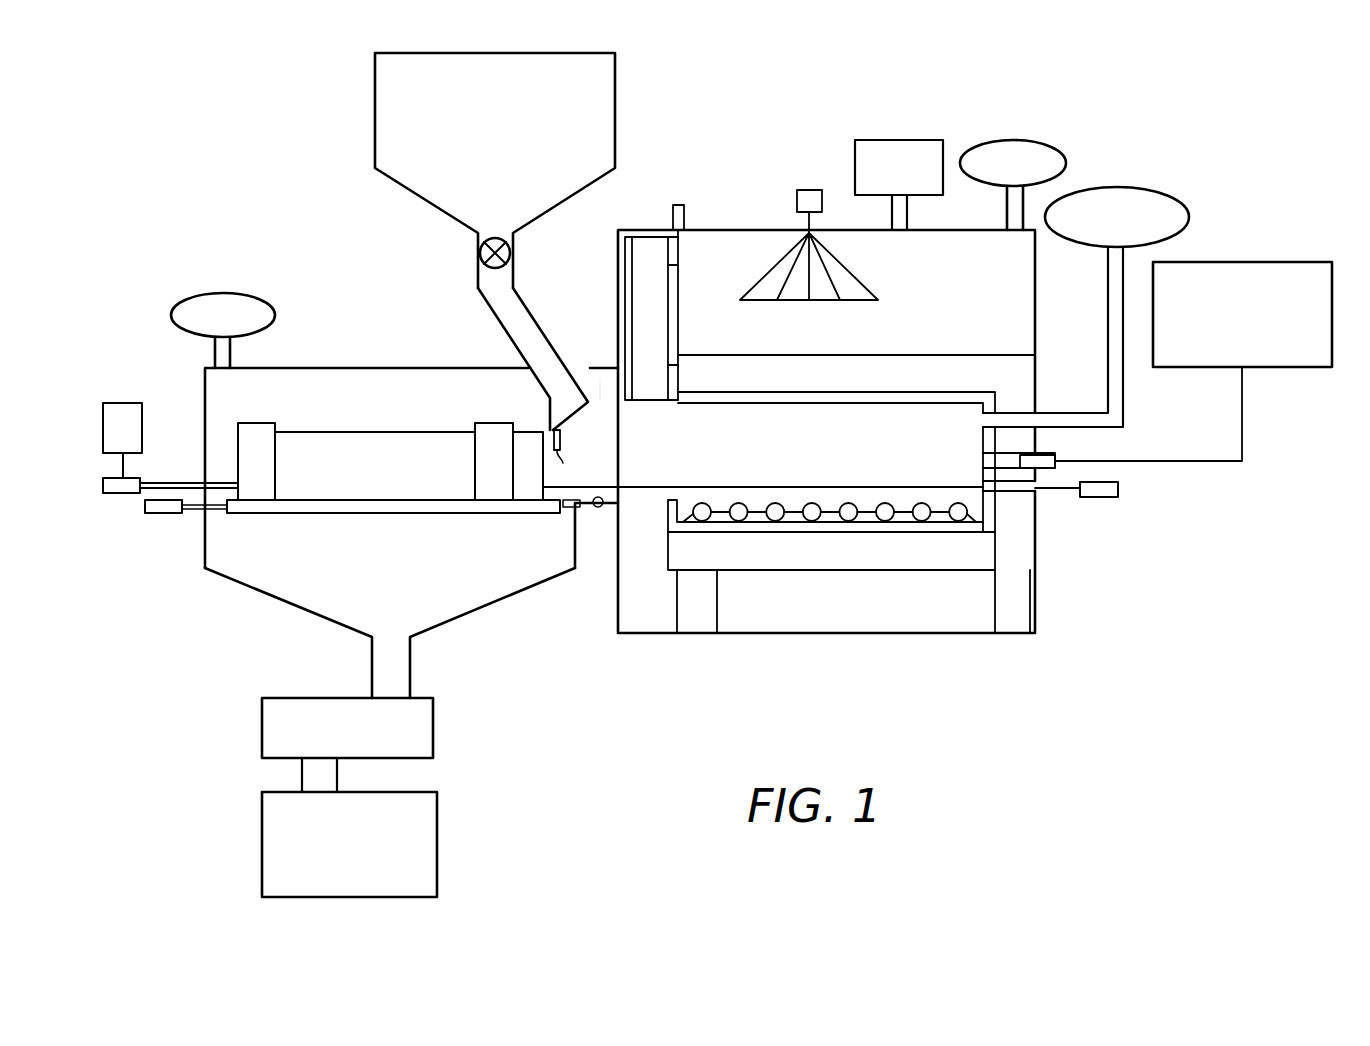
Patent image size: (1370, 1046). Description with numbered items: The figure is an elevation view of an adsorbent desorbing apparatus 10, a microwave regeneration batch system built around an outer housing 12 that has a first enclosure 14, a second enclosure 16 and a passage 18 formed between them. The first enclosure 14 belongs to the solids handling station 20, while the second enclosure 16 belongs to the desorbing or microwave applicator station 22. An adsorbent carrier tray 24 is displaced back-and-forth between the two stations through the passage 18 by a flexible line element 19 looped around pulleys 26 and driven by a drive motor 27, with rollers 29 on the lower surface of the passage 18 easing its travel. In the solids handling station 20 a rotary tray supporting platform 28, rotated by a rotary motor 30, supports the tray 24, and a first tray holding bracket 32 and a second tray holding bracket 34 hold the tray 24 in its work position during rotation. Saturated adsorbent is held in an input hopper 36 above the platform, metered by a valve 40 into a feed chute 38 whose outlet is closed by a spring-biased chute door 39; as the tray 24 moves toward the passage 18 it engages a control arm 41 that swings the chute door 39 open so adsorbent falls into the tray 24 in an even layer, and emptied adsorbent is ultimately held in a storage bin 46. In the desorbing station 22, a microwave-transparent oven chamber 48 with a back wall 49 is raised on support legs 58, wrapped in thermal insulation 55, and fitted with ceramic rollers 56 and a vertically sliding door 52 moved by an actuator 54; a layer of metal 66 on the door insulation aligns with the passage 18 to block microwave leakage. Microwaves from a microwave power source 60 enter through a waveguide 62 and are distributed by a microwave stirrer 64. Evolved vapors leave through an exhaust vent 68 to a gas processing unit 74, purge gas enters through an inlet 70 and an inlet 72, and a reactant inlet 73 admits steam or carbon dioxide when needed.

The adsorbent desorbing apparatus 10 is at (197, 172).
The outer housing 12 is at (728, 229).
The first enclosure 14 is at (330, 367).
The second enclosure 16 is at (838, 636).
The passage 18 is at (607, 425).
The flexible line element 19 is at (158, 480).
The solids handling station 20 is at (398, 365).
The desorbing or microwave applicator station 22 is at (1040, 545).
The adsorbent carrier tray 24 is at (370, 442).
The pulleys 26 is at (120, 494).
The drive motor 27 is at (118, 406).
The rotary tray supporting platform 28 is at (282, 512).
The rollers 29 is at (598, 512).
The rotary motor 30 is at (162, 510).
The first tray holding bracket 32 is at (498, 496).
The second tray holding bracket 34 is at (257, 432).
The input hopper 36 is at (378, 62).
The feed chute 38 is at (497, 306).
The chute door 39 is at (568, 432).
The valve 40 is at (480, 256).
The control arm 41 is at (573, 468).
The storage bin 46 is at (432, 862).
The oven chamber 48 is at (840, 394).
The back wall 49 is at (983, 440).
The vertically sliding door 52 is at (678, 303).
The actuator 54 is at (679, 205).
The thermal insulation 55 is at (648, 243).
The ceramic rollers 56 is at (871, 526).
The support legs 58 is at (700, 636).
The microwave power source 60 is at (890, 150).
The waveguide 62 is at (905, 222).
The microwave stirrer 64 is at (786, 262).
The layer of metal 66 is at (620, 247).
The exhaust vent 68 is at (1060, 458).
The inlet 70 is at (205, 296).
The inlet 72 is at (1015, 146).
The reactant inlet 73 is at (1130, 196).
The gas processing unit 74 is at (1280, 272).